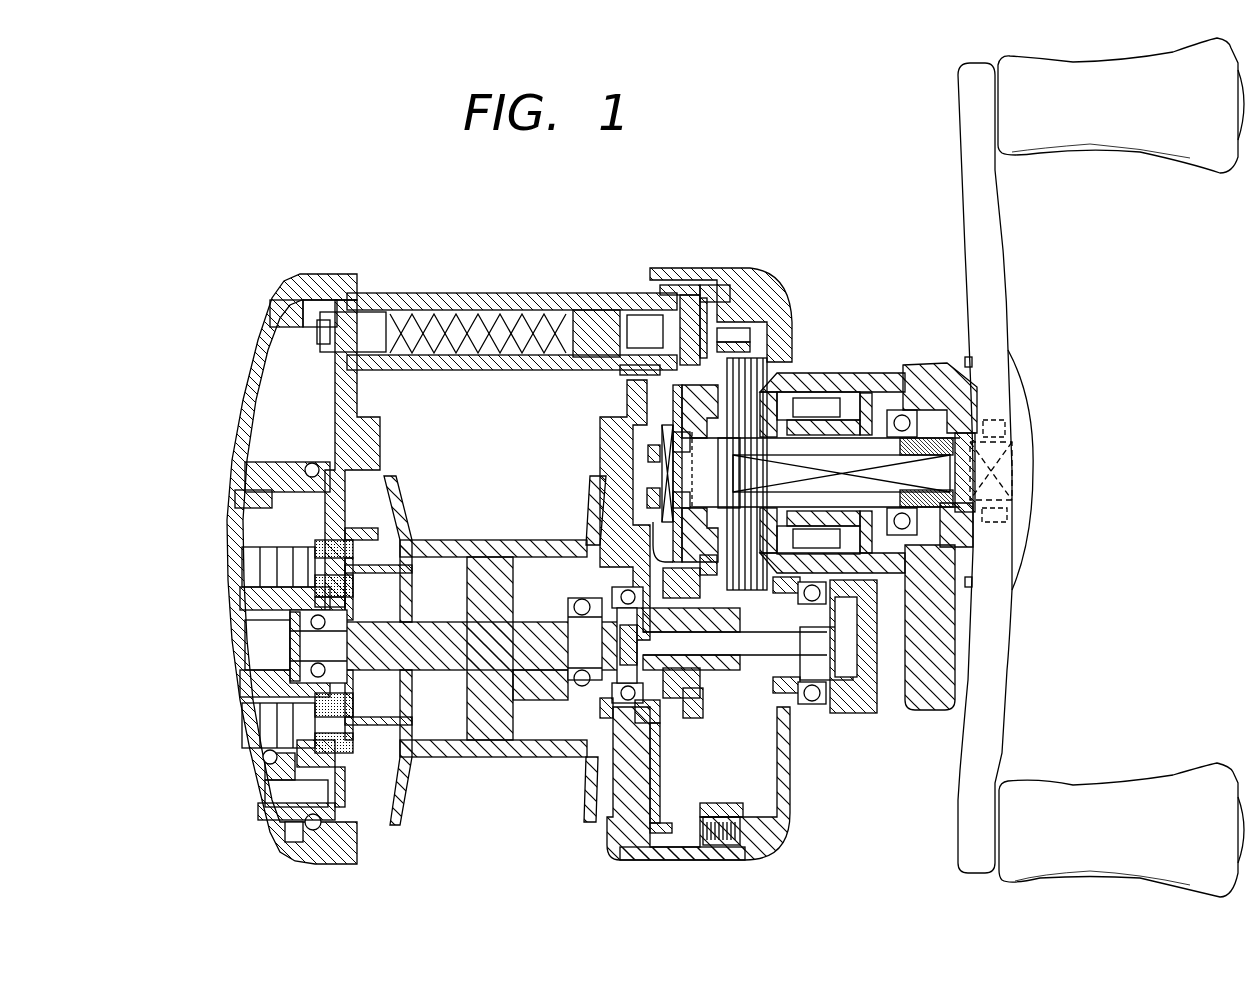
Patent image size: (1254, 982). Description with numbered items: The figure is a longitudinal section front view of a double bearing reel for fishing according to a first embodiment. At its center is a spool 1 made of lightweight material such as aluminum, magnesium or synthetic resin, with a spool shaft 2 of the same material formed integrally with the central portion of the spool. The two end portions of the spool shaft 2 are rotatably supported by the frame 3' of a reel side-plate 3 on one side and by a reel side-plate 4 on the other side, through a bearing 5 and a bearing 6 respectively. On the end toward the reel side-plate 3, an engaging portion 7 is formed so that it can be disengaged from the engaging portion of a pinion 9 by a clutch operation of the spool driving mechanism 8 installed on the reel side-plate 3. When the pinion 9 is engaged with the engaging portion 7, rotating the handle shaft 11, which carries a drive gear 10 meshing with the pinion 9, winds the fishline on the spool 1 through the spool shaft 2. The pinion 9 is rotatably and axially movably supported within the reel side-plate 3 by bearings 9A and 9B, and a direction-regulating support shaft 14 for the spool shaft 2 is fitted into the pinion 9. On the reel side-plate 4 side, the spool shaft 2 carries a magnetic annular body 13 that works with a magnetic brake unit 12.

The spool 1 is at (480, 547).
The spool shaft 2 is at (547, 653).
The reel side-plate 3 is at (781, 702).
The frame 3' is at (650, 866).
The reel side-plate 4 is at (240, 403).
The bearing 5 is at (585, 590).
The bearing 6 is at (242, 603).
The engaging portion 7 is at (597, 710).
The spool driving mechanism 8 is at (780, 363).
The pinion 9 is at (733, 678).
The bearing 9A is at (628, 588).
The bearing 9B is at (827, 717).
The drive gear 10 is at (748, 332).
The handle shaft 11 is at (850, 455).
The magnetic brake unit 12 is at (372, 742).
The magnetic annular body 13 is at (377, 567).
The direction-regulating support shaft 14 is at (862, 705).